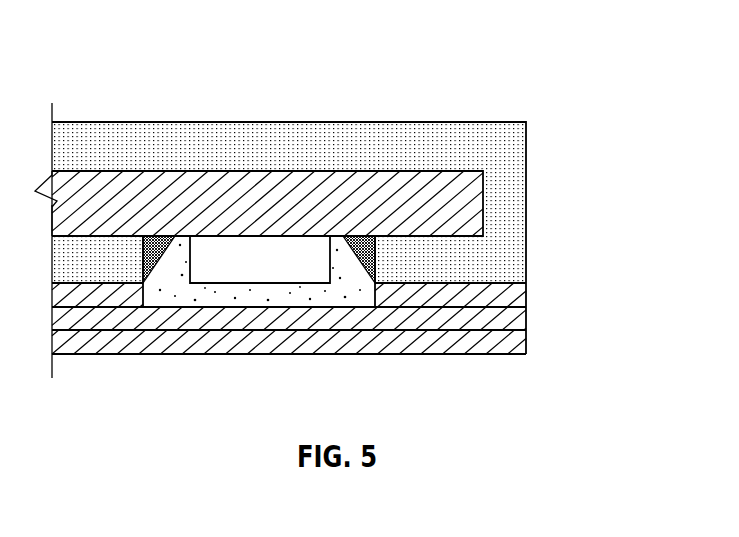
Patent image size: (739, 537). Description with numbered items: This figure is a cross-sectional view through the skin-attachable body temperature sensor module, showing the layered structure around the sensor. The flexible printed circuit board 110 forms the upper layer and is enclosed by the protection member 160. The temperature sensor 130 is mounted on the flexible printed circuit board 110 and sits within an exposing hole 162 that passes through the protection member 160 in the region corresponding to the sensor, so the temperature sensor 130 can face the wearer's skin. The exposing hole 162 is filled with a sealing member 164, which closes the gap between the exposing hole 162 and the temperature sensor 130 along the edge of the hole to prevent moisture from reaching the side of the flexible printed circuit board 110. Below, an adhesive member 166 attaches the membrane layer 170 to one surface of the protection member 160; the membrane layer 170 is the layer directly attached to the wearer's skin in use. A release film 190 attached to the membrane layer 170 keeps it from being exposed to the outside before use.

The flexible printed circuit board 110 is at (360, 200).
The temperature sensor 130 is at (272, 285).
The protection member 160 is at (497, 147).
The exposing hole 162 is at (377, 253).
The sealing member 164 is at (173, 287).
The adhesive member 166 is at (526, 292).
The membrane layer 170 is at (526, 318).
The release film 190 is at (526, 345).